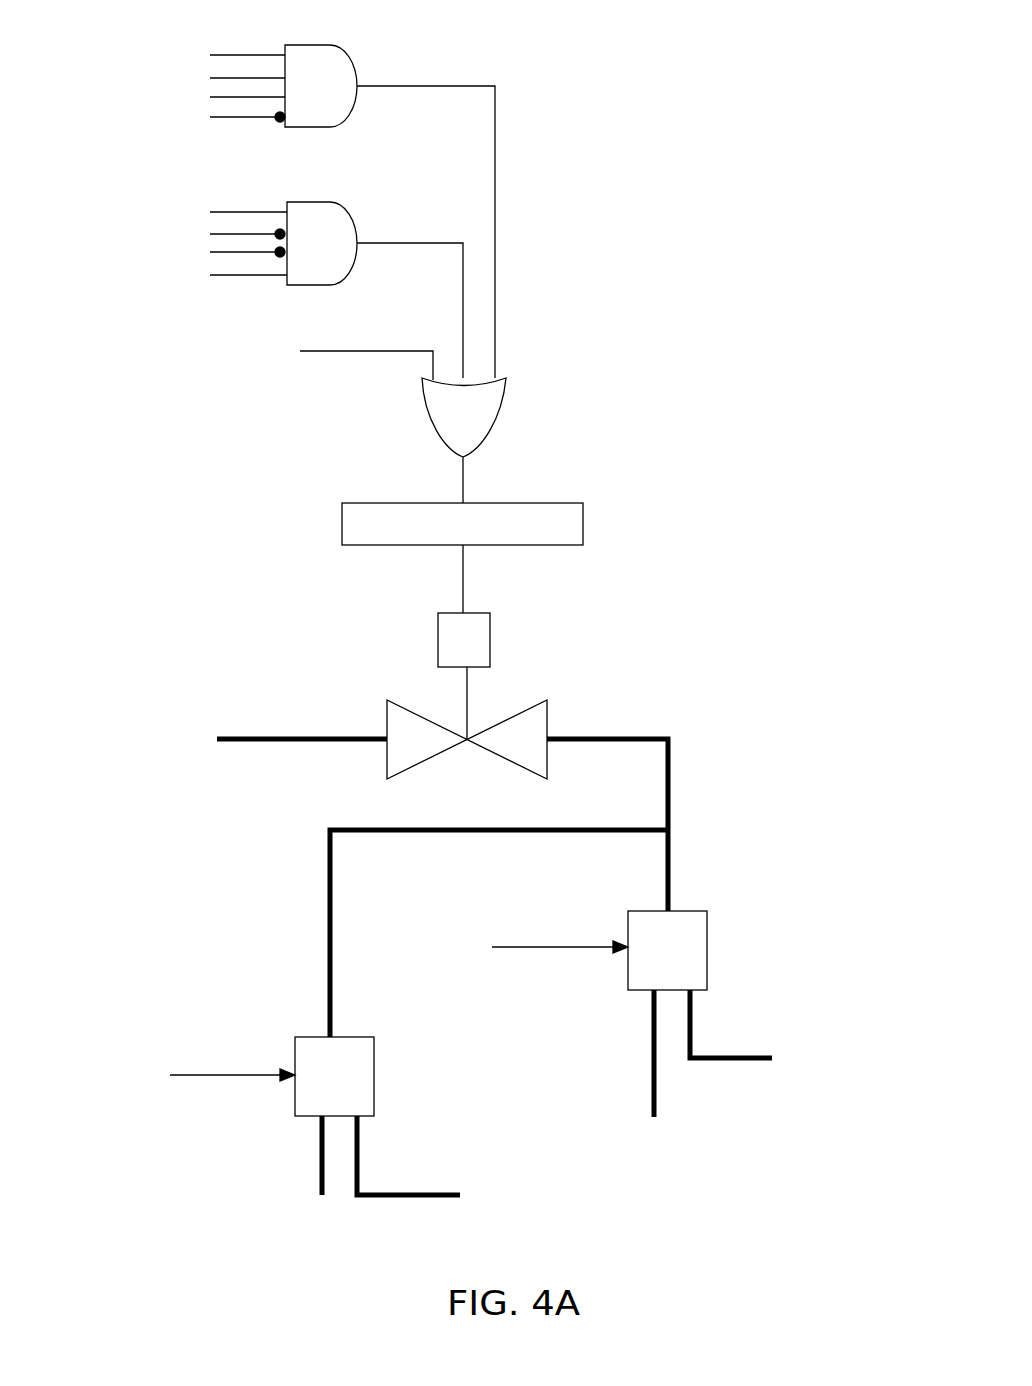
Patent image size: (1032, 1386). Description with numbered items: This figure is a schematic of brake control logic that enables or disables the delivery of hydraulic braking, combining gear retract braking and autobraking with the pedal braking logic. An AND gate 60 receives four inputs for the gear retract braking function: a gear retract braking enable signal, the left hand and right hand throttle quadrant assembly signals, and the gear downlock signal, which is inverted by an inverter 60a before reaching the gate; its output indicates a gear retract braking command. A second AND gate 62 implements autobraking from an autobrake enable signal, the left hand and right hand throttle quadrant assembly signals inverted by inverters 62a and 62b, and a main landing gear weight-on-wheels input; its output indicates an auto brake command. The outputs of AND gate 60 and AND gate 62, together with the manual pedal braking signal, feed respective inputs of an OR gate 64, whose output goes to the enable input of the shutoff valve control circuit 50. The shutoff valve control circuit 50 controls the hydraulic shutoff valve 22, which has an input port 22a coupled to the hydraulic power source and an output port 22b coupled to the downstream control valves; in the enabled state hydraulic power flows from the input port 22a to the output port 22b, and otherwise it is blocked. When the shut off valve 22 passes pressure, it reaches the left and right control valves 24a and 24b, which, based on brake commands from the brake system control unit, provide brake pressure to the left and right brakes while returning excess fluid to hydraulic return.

The AND gate 60 is at (305, 45).
The inverter 60a is at (277, 122).
The AND gate 62 is at (328, 285).
The inverter 62a is at (277, 230).
The inverter 62b is at (278, 257).
The OR gate 64 is at (504, 408).
The shutoff valve control circuit 50 is at (372, 503).
The hydraulic shutoff valve 22 is at (521, 666).
The input port 22a is at (365, 754).
The output port 22b is at (578, 752).
The left control valve 24a is at (655, 911).
The right control valve 24b is at (355, 1037).